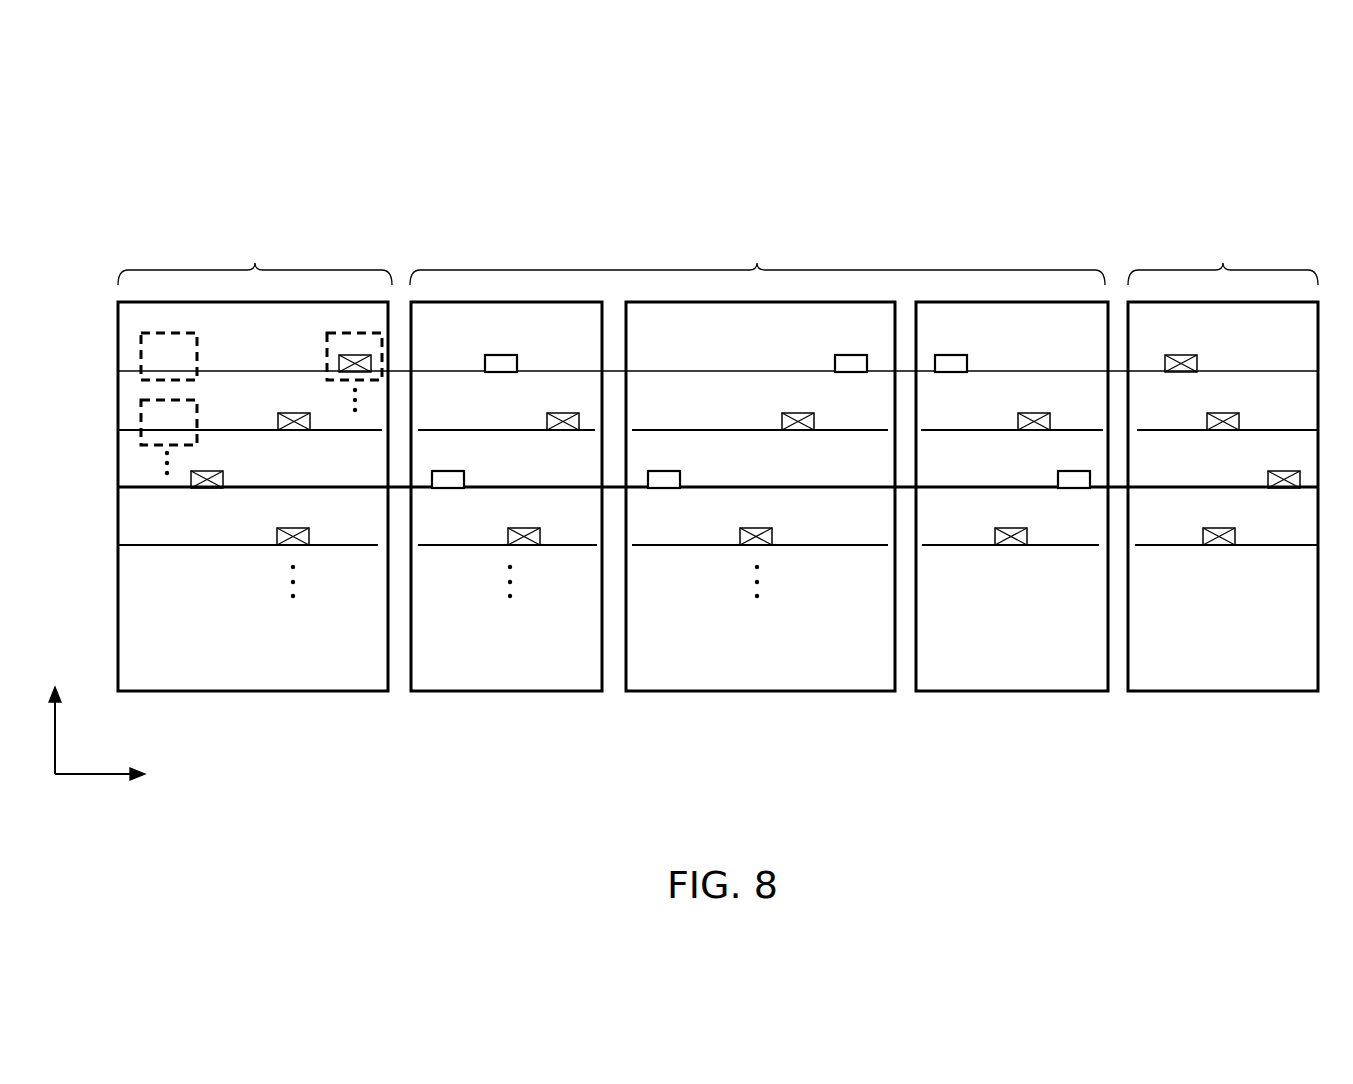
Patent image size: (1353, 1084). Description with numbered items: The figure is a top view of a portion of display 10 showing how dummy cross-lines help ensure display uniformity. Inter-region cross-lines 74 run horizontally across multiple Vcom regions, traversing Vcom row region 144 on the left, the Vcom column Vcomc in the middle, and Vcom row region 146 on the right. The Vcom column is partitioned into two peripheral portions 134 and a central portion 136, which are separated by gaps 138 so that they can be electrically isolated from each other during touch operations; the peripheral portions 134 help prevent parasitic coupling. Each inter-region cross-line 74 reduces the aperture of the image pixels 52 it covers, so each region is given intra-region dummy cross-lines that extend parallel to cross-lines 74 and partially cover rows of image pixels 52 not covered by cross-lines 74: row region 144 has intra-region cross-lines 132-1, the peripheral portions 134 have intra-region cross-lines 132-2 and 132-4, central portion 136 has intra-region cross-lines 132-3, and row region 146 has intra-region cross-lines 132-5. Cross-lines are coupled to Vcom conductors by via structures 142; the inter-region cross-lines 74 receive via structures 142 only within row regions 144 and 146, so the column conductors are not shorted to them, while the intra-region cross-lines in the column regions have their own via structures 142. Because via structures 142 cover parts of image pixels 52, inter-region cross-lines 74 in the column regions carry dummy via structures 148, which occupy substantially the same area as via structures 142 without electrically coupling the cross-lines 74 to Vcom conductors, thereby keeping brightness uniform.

The display 10 is at (1218, 140).
The image pixels 52 is at (182, 333).
The inter-region cross-lines 74 is at (130, 371).
The intra-region cross-lines 132-1 is at (130, 430).
The intra-region cross-lines 132-2 is at (423, 430).
The intra-region cross-lines 132-3 is at (672, 430).
The intra-region cross-lines 132-4 is at (930, 430).
The intra-region cross-lines 132-5 is at (1158, 430).
The peripheral portions 134 is at (602, 705).
The central portion 136 is at (895, 705).
The gaps 138 is at (400, 705).
The via structures 142 is at (340, 373).
The Vcom row region 144 is at (257, 693).
The Vcom row region 146 is at (1225, 693).
The dummy via structures 148 is at (502, 355).